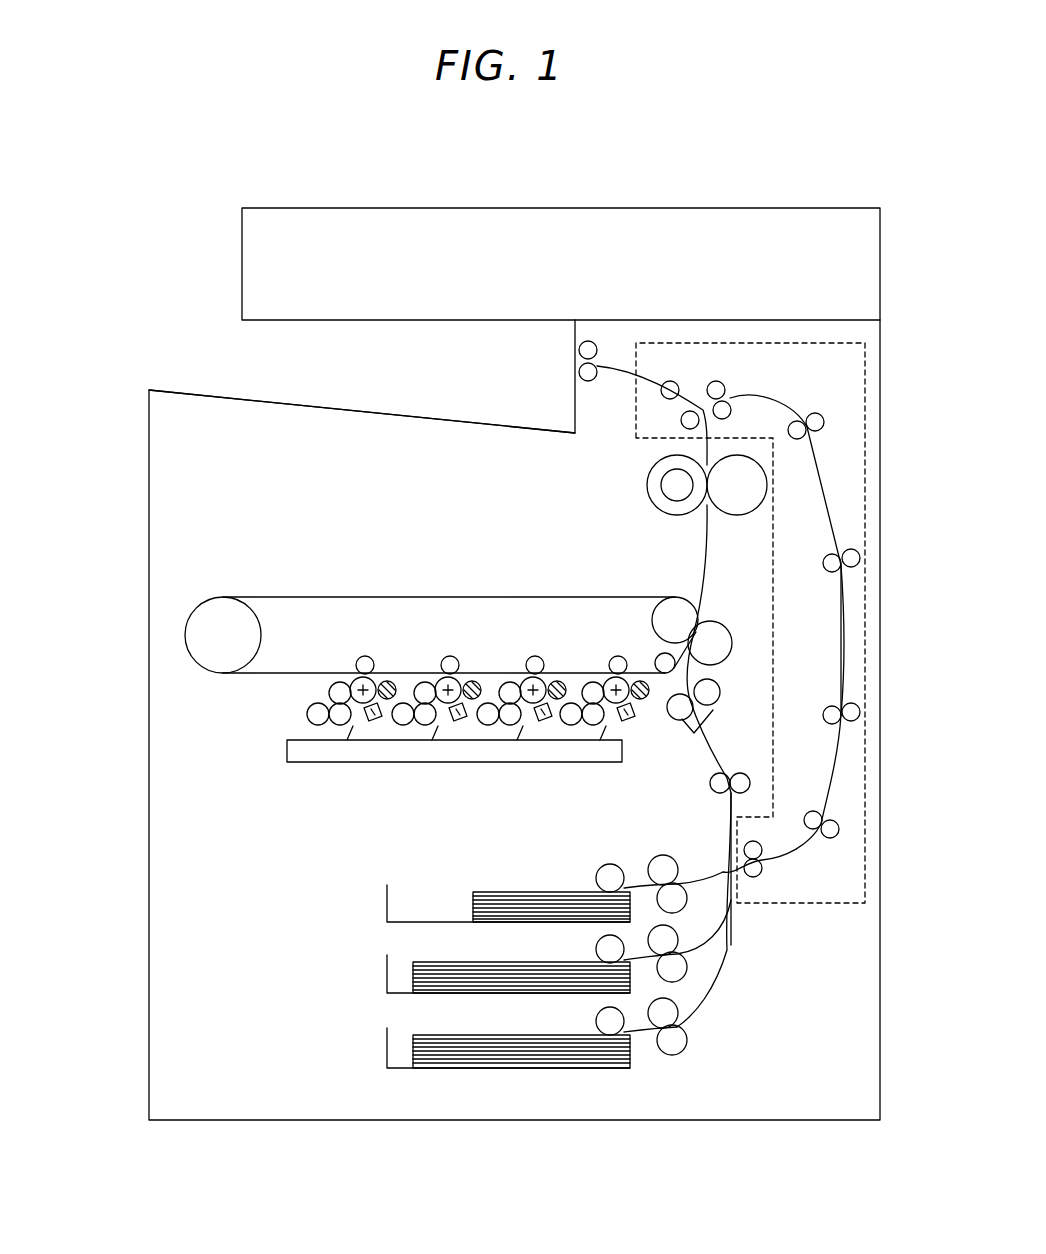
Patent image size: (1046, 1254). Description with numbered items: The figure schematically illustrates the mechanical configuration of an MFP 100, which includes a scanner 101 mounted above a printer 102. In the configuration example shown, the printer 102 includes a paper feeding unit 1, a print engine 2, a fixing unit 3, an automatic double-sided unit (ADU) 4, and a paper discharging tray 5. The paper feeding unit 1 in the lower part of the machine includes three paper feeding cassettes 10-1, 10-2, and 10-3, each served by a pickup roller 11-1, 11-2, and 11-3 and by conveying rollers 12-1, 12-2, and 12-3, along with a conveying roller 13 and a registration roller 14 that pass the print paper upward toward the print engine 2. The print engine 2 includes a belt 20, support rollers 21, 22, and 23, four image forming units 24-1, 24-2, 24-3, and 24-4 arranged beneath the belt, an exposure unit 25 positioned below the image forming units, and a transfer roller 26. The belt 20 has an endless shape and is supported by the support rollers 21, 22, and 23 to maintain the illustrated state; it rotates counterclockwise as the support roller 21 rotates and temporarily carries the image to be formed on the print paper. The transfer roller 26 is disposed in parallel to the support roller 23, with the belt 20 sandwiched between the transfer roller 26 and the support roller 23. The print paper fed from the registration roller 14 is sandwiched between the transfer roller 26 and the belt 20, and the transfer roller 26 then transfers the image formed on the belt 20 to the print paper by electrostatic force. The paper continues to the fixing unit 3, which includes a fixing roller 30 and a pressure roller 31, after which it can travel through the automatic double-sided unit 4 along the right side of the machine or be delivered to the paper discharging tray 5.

The MFP 100 is at (650, 172).
The scanner 101 is at (248, 272).
The printer 102 is at (156, 531).
The paper discharging tray 5 is at (370, 412).
The automatic double-sided unit (ADU) 4 is at (868, 421).
The fixing unit 3 is at (622, 484).
The fixing roller 30 is at (676, 516).
The pressure roller 31 is at (736, 516).
The print engine 2 is at (344, 548).
The belt 20 is at (484, 595).
The support roller 21 is at (222, 672).
The support roller 23 is at (681, 603).
The transfer roller 26 is at (727, 638).
The support roller 22 is at (720, 688).
The registration roller 14 is at (695, 738).
The conveying roller 13 is at (726, 770).
The exposure unit 25 is at (330, 764).
The image forming unit 24-1 is at (602, 658).
The image forming unit 24-2 is at (518, 655).
The image forming unit 24-3 is at (436, 658).
The image forming unit 24-4 is at (352, 656).
The paper feeding unit 1 is at (248, 978).
The paper feeding cassette 10-1 is at (387, 903).
The paper feeding cassette 10-2 is at (387, 975).
The paper feeding cassette 10-3 is at (387, 1047).
The pickup roller 11-1 is at (596, 875).
The pickup roller 11-2 is at (596, 947).
The pickup roller 11-3 is at (596, 1019).
The conveying rollers 12-1 is at (683, 896).
The conveying rollers 12-2 is at (688, 966).
The conveying rollers 12-3 is at (684, 1038).